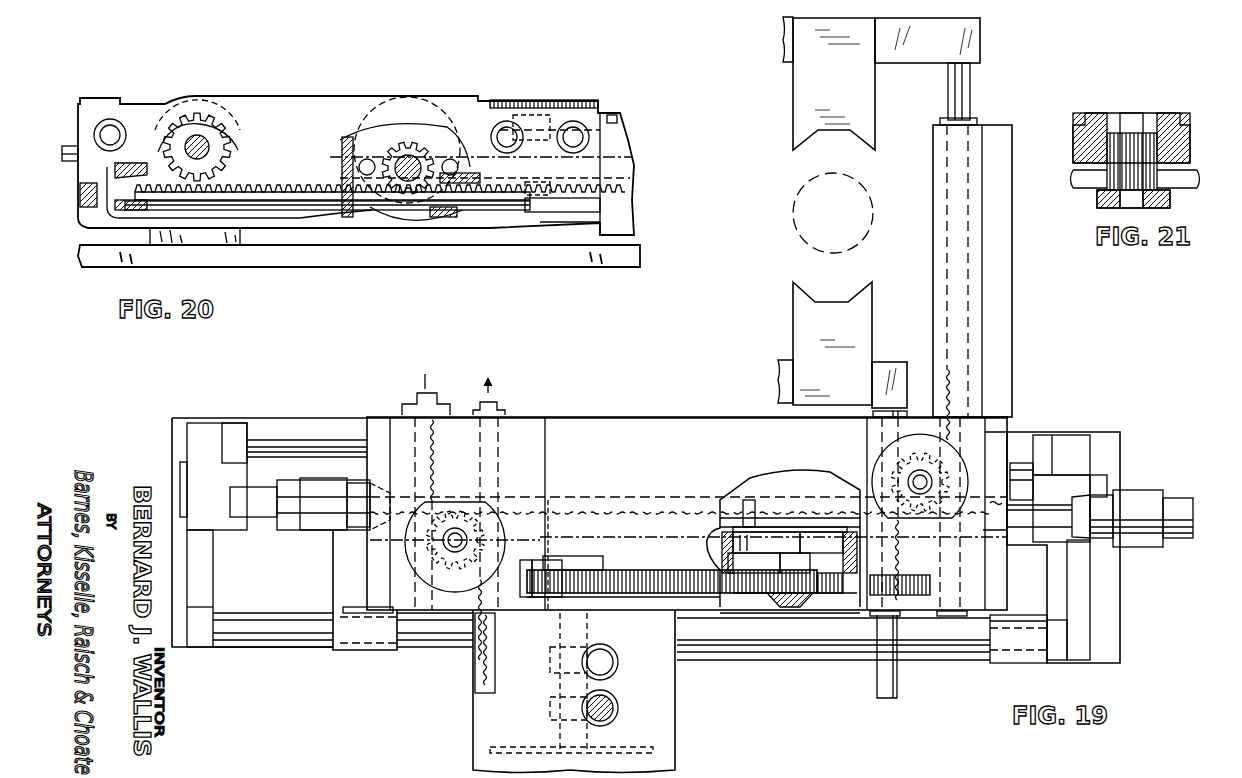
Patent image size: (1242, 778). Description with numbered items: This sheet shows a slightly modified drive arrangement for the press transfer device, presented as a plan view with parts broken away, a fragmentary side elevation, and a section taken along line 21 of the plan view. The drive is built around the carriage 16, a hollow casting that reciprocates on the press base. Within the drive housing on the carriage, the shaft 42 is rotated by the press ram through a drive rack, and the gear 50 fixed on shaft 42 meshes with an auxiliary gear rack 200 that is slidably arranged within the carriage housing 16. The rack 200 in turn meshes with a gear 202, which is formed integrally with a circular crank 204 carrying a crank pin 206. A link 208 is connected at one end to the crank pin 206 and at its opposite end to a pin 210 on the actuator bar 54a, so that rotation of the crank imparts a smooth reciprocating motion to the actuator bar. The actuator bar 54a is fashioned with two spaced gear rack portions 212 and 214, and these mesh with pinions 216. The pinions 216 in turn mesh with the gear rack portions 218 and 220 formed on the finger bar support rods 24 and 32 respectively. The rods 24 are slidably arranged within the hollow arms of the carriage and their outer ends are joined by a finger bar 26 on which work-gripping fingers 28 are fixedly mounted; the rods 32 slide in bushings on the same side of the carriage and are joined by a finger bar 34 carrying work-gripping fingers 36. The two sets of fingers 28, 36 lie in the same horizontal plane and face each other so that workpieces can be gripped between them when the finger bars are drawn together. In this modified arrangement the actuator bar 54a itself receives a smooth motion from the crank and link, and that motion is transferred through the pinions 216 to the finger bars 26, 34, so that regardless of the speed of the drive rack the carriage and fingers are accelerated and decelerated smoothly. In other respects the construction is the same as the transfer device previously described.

In FIG. 20, the carriage 16 is at (207, 95).
In FIG. 19, the carriage 16 is at (607, 416).
In FIG. 19, the section line 21— 21 is at (513, 537).
In FIG. 19, the rod 24 is at (963, 90).
In FIG. 19, the finger bar 26 is at (980, 47).
In FIG. 19, the work-gripping fingers 28 is at (866, 100).
In FIG. 19, the rod 32 is at (872, 411).
In FIG. 19, the finger bar 34 is at (888, 366).
In FIG. 19, the work-gripping fingers 36 is at (866, 315).
In FIG. 19, the shaft 42 is at (589, 623).
In FIG. 20, the pinion 50 is at (224, 137).
In FIG. 19, the pinion 50 is at (606, 570).
In FIG. 19, the actuator bar 54a is at (641, 498).
In FIG. 20, the auxiliary gear rack 200 is at (318, 197).
In FIG. 19, the auxiliary gear rack 200 is at (637, 570).
In FIG. 20, the gear 202 is at (416, 150).
In FIG. 19, the gear 202 is at (788, 612).
In FIG. 20, the circular crank 204 is at (374, 140).
In FIG. 19, the circular crank 204 is at (770, 548).
In FIG. 19, the crank pin 206 is at (796, 546).
In FIG. 19, the link 208 is at (805, 528).
In FIG. 19, the pin 210 is at (722, 520).
In FIG. 19, the gear rack portion 212 is at (548, 498).
In FIG. 19, the gear rack portion 214 is at (991, 522).
In FIG. 21, the pinion 216 is at (1105, 180).
In FIG. 21, the gear rack portion 218 is at (1185, 150).
In FIG. 19, the gear rack portion 218 is at (960, 392).
In FIG. 21, the gear rack portion 220 is at (1106, 135).
In FIG. 19, the gear rack portion 220 is at (893, 540).